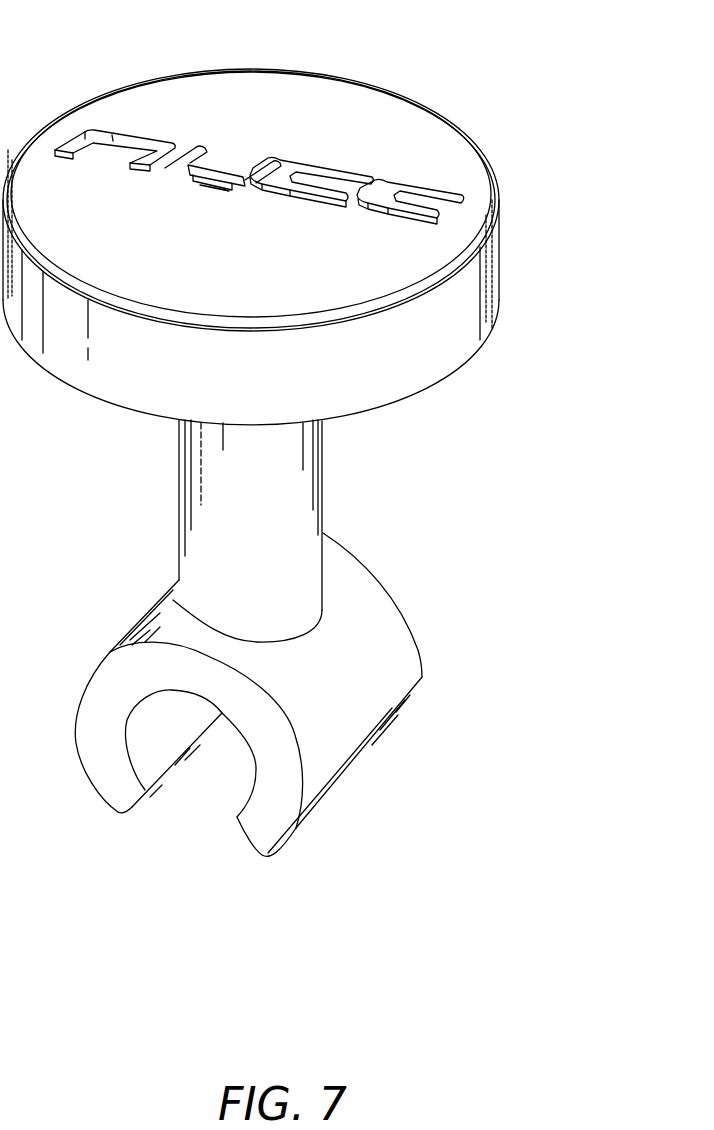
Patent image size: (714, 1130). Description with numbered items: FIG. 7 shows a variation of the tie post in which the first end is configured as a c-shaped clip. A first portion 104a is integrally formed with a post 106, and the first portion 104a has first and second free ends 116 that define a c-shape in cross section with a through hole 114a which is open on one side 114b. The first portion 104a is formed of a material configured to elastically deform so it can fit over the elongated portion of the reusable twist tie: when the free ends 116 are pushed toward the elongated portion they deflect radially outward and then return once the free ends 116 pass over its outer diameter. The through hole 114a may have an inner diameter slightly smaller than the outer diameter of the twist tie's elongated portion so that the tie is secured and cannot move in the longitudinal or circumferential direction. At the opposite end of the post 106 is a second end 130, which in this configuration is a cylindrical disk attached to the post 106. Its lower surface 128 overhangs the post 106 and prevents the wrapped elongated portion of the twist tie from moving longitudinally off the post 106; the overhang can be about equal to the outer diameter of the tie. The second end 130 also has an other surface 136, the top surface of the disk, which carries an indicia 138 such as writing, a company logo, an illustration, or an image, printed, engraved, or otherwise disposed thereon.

The second end 130 is at (298, 214).
The other surface 136 is at (367, 113).
The indicia 138 is at (222, 167).
The surface 128 is at (473, 345).
The post 106 is at (323, 468).
The first portion 104a is at (260, 739).
The first and second free ends 116 is at (130, 818).
The through hole 114a is at (215, 765).
The open side 114b is at (219, 830).